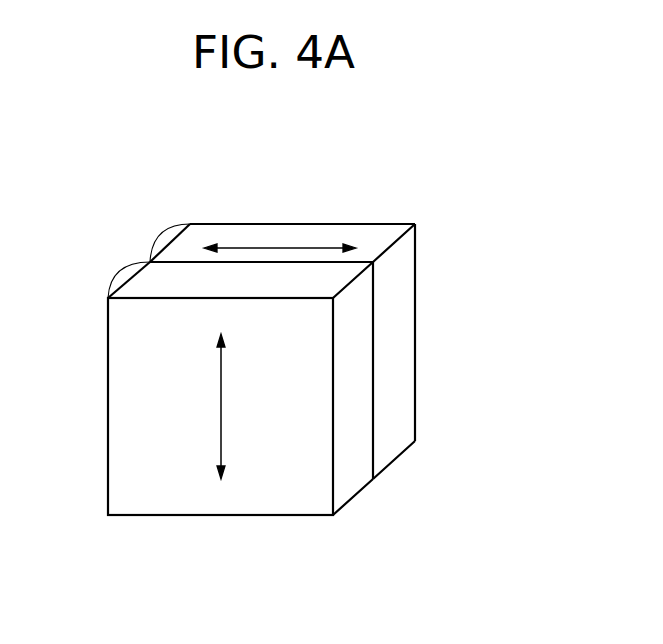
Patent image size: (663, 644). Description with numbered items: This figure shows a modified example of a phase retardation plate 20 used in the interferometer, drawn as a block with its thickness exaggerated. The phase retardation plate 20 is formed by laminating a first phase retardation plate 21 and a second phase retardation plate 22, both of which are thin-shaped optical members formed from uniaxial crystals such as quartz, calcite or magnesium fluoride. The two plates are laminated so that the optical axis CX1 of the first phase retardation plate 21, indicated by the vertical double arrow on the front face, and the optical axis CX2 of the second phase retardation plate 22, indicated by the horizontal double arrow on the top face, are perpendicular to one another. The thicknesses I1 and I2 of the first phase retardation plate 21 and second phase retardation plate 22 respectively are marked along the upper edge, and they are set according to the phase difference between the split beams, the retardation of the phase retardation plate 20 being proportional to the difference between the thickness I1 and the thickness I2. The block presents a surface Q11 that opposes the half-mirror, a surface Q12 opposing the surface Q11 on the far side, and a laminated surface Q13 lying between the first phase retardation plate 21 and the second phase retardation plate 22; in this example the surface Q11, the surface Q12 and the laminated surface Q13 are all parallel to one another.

The phase retardation plate 20 is at (321, 395).
The first phase retardation plate 21 is at (290, 414).
The second phase retardation plate 22 is at (311, 356).
The surface Q11 is at (302, 502).
The surface Q12 is at (415, 420).
The laminated surface Q13 is at (373, 455).
The optical axis CX1 is at (221, 400).
The optical axis CX2 is at (312, 248).
The thickness I1 is at (124, 274).
The thickness I2 is at (165, 237).